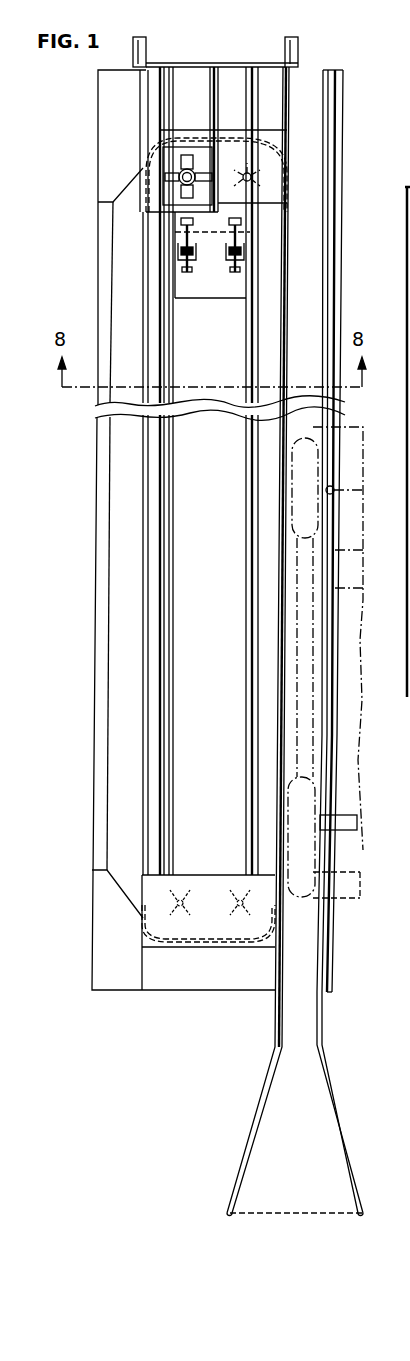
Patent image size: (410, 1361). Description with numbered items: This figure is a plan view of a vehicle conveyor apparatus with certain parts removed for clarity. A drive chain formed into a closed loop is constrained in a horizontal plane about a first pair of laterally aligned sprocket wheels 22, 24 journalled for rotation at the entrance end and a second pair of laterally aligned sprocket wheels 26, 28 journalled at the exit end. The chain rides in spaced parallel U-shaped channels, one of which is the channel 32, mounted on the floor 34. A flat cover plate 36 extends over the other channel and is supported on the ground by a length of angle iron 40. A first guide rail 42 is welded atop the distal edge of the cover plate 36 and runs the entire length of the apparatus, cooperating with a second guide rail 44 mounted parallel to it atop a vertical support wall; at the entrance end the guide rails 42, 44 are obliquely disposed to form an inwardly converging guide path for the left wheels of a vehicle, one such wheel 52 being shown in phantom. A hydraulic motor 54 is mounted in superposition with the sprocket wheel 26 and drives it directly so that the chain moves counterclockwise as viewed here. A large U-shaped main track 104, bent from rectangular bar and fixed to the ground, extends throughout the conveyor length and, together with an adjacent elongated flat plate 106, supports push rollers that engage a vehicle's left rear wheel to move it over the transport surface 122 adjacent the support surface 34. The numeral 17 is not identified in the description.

The adjacent structure 17 is at (404, 424).
The sprocket wheel 22 is at (145, 925).
The sprocket wheel 24 is at (237, 940).
The sprocket wheel 26 is at (178, 130).
The sprocket wheel 28 is at (245, 165).
The channel 32 is at (168, 484).
The floor 34 is at (220, 549).
The cover plate 36 is at (270, 378).
The angle iron 40 is at (253, 445).
The first guide rail 42 is at (275, 1037).
The second guide rail 44 is at (320, 1013).
The wheel 52 is at (362, 872).
The hydraulic motor 54 is at (170, 170).
The main track 104 is at (143, 557).
The flat plate 106 is at (152, 595).
The transport surface 122 is at (409, 958).